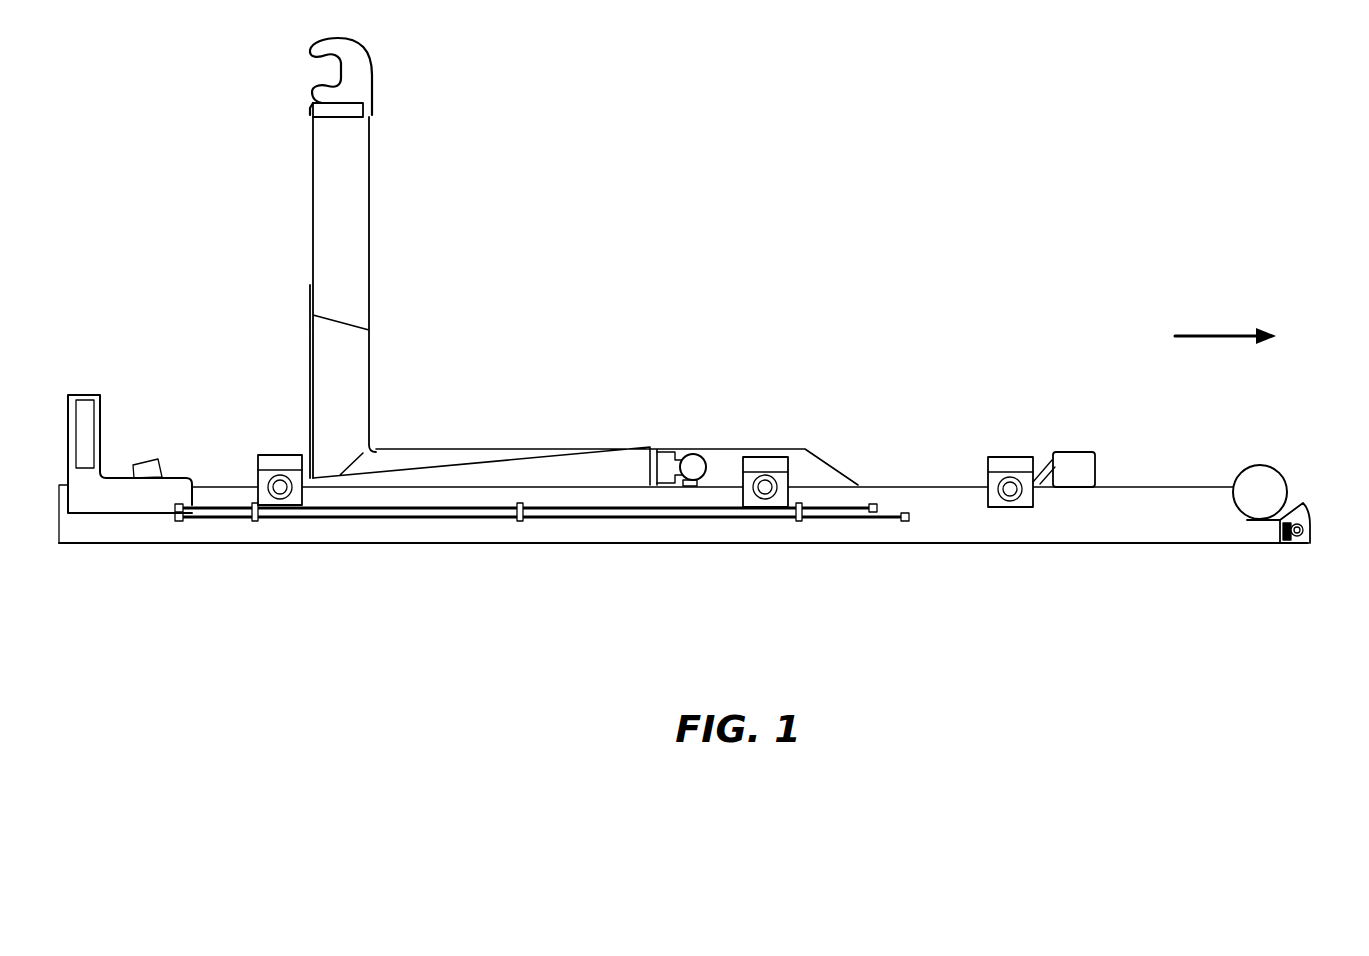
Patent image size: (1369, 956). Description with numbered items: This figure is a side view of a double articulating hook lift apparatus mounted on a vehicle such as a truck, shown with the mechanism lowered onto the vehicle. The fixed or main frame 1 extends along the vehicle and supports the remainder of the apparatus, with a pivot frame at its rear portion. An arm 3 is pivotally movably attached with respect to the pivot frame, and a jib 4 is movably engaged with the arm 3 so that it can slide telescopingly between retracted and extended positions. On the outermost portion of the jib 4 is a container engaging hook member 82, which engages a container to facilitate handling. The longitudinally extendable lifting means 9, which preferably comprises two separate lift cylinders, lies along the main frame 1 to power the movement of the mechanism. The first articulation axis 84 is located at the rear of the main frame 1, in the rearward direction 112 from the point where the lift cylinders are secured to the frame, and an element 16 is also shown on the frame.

The main frame 1 is at (602, 535).
The arm 3 is at (442, 455).
The jib 4 is at (334, 278).
The longitudinally extendable lifting means 9 is at (590, 458).
The control box 16 is at (815, 455).
The container engaging hook member 82 is at (340, 72).
The first articulation axis 84 is at (1305, 510).
The rearward direction 112 is at (1220, 335).